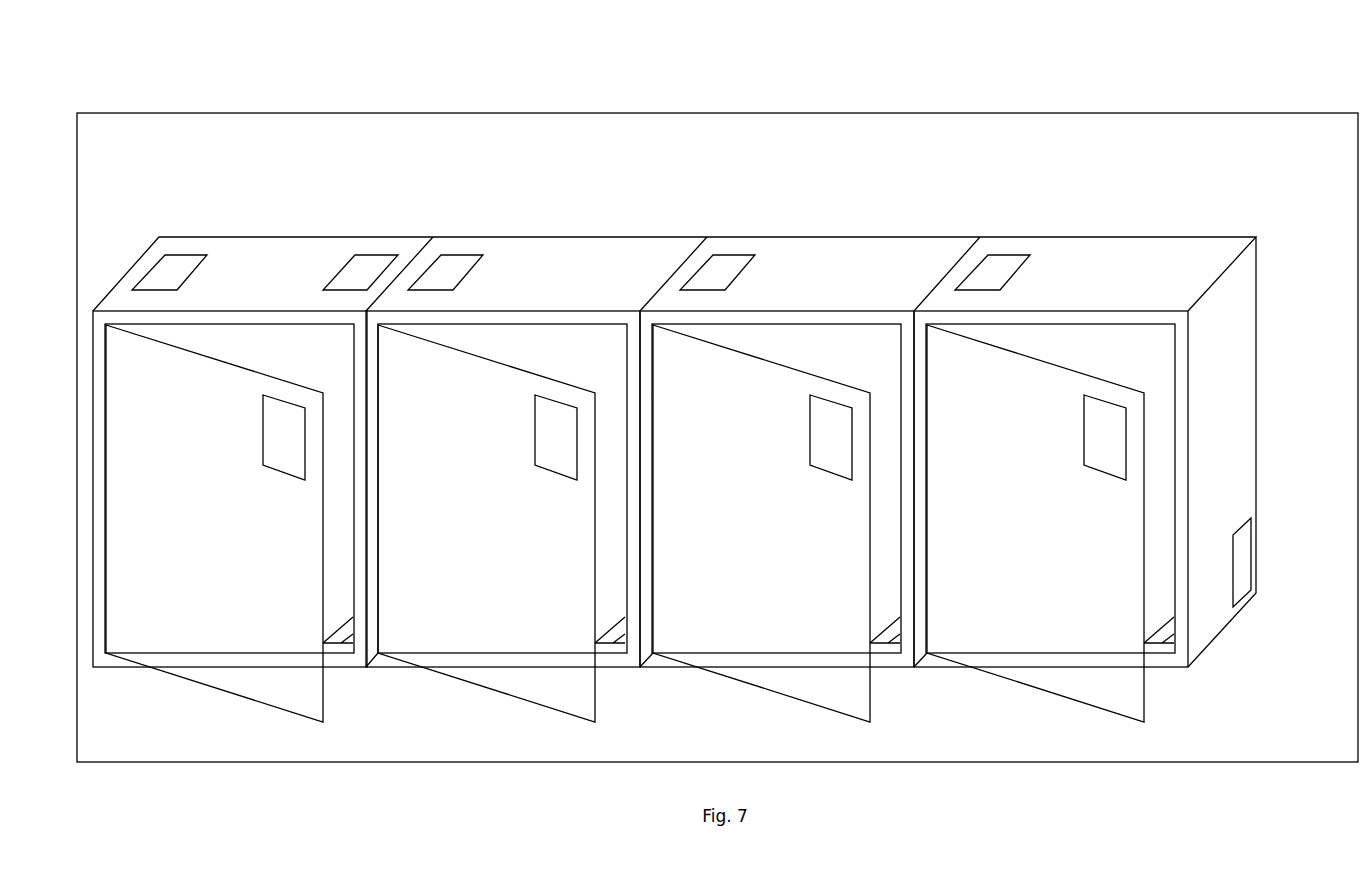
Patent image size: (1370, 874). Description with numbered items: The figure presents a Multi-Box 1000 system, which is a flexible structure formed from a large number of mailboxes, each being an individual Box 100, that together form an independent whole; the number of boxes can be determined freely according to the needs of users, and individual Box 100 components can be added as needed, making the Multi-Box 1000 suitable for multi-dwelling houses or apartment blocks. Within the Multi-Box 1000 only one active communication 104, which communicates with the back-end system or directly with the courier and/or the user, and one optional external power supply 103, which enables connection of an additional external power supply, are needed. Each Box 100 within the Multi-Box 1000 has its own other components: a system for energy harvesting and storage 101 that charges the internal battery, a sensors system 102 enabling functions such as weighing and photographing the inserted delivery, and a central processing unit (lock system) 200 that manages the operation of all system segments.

The Multi-Box 1000 is at (1245, 132).
The Box 100 is at (408, 240).
The system for energy harvesting and storage 101 is at (162, 278).
The active communication 104 is at (372, 272).
The central processing unit (lock system) 200 is at (288, 422).
The sensors system 102 is at (338, 640).
The external power supply 103 is at (1243, 556).